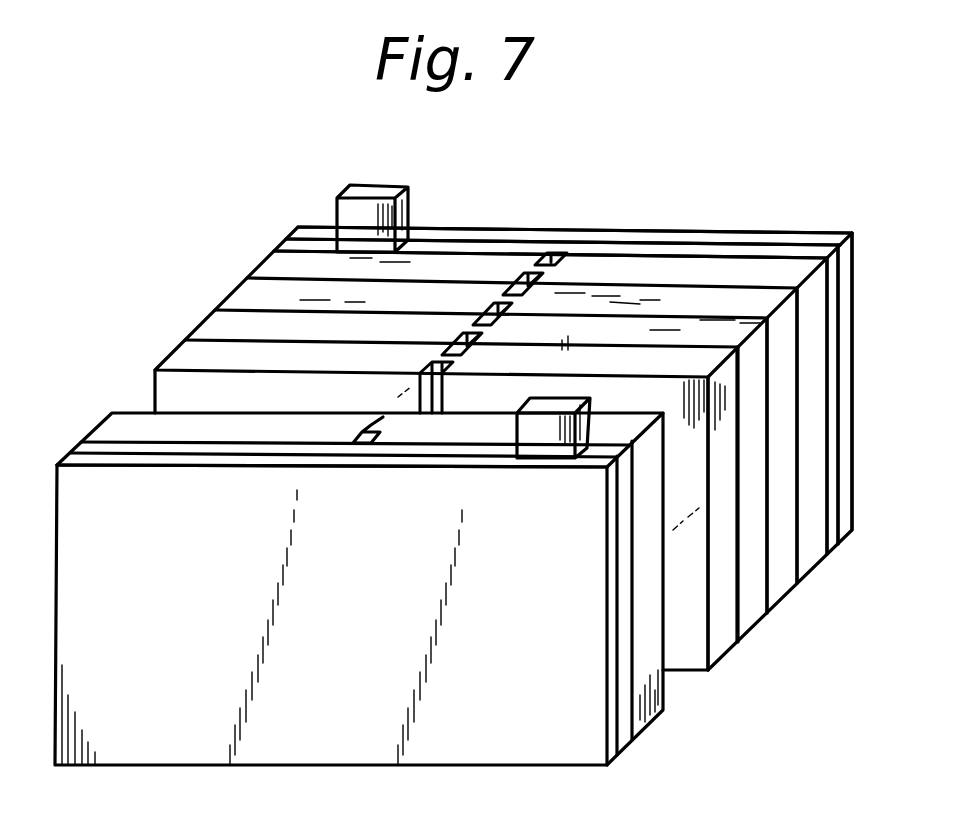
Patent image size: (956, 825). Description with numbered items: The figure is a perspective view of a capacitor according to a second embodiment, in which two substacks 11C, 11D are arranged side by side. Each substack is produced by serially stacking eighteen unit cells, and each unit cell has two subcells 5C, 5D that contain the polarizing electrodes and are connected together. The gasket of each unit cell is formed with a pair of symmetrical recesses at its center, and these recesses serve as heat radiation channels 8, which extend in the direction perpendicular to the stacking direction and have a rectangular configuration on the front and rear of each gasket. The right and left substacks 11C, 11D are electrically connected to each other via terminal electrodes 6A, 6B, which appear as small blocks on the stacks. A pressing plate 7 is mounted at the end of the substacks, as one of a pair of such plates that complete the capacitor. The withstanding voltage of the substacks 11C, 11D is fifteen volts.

The substack 11C is at (247, 221).
The substack 11D is at (725, 682).
The subcell 5C is at (285, 268).
The subcell 5D is at (647, 582).
The terminal electrode 6A is at (76, 448).
The terminal electrode 6B is at (452, 246).
The pressing plate 7 is at (64, 456).
The heat radiation channel 8 is at (573, 234).